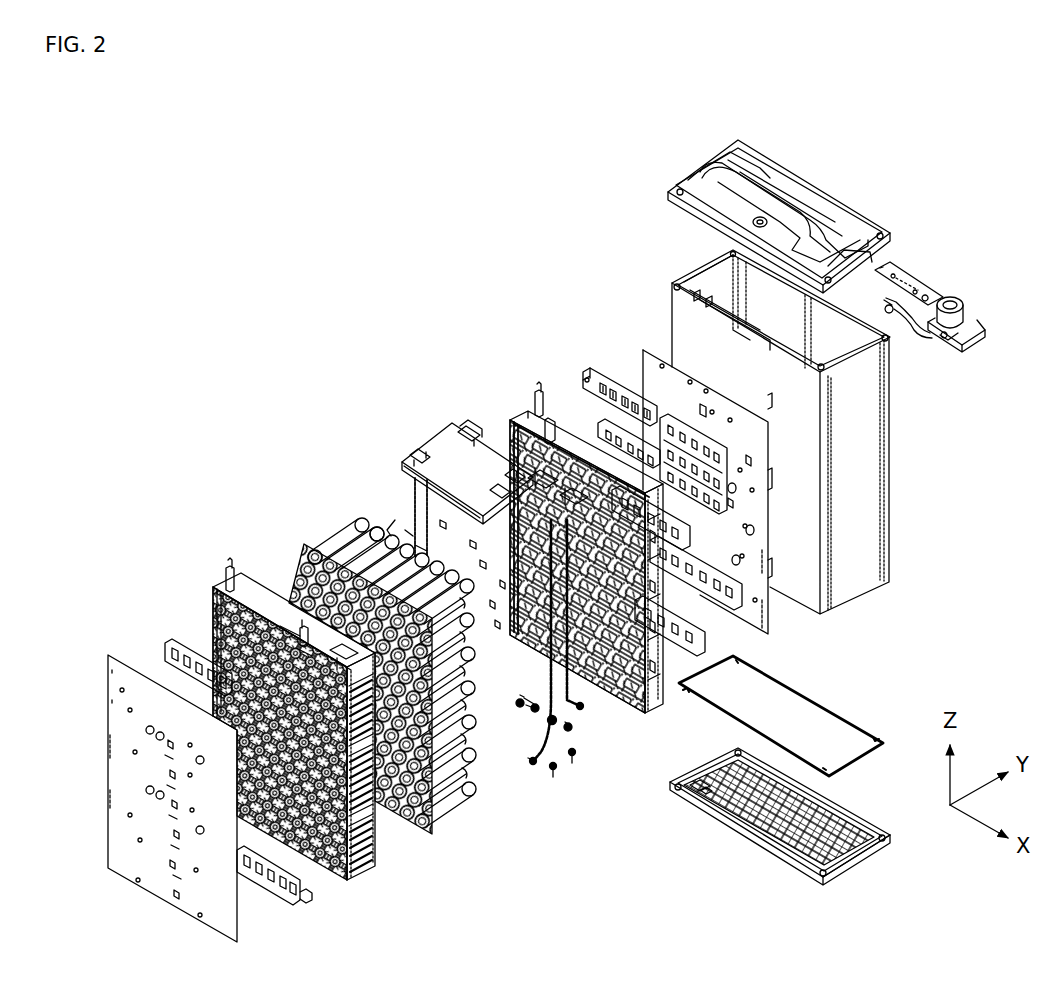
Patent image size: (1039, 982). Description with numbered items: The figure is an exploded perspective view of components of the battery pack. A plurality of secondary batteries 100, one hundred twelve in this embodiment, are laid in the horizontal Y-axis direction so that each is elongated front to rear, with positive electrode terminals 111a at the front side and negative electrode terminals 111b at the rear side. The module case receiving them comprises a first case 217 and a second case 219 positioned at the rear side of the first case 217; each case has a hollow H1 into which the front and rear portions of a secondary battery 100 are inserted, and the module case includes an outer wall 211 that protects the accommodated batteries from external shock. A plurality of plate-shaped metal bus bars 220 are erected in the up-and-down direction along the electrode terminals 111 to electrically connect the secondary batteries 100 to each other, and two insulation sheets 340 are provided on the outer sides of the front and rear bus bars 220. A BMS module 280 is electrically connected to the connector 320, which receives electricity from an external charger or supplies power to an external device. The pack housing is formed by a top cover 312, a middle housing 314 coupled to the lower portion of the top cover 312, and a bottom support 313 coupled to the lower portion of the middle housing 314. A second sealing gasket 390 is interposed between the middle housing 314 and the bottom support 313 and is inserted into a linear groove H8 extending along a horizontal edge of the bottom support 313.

The secondary battery 100 is at (336, 530).
The electrode terminal 111 is at (1020, 628).
The positive electrode terminal 111a is at (310, 555).
The negative electrode terminal 111b is at (377, 528).
The outer wall 211 is at (380, 848).
The first case 217 is at (214, 576).
The second case 219 is at (516, 404).
The bus bar 220 is at (586, 368).
The BMS module 280 is at (420, 446).
The top cover 312 is at (826, 186).
The bottom support 313 is at (740, 838).
The middle housing 314 is at (678, 266).
The connector 320 is at (957, 298).
The insulation sheet 340 is at (646, 342).
The second sealing gasket 390 is at (830, 708).
The hollow H1 is at (512, 421).
The linear groove H8 is at (838, 806).